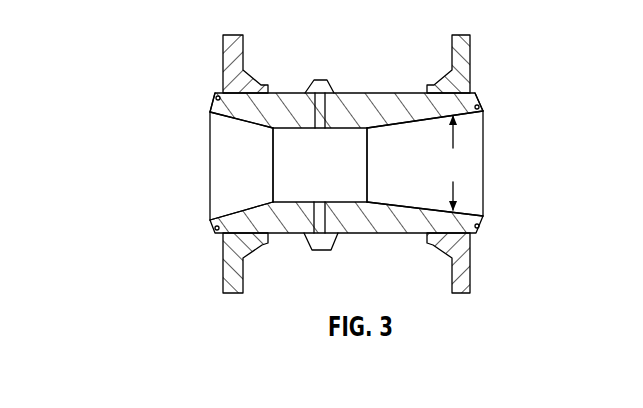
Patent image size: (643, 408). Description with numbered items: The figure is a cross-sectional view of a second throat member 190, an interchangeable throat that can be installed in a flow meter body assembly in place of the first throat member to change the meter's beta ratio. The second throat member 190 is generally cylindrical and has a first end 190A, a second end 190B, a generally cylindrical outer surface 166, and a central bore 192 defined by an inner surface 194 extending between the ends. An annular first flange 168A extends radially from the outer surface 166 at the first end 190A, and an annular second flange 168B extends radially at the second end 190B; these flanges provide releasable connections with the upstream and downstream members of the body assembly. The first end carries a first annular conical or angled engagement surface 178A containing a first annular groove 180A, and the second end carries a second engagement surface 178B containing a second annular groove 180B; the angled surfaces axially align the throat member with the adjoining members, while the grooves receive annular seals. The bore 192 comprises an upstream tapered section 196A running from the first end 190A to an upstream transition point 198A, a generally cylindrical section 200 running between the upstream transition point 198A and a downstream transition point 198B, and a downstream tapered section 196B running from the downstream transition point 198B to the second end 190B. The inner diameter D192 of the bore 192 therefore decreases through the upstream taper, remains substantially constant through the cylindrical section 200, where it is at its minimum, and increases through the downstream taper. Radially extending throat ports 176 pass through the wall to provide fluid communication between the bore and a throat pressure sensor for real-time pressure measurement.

The outer surface 166 is at (347, 166).
The first flange 168A is at (228, 298).
The second flange 168B is at (468, 298).
The throat ports 176 is at (317, 112).
The first engagement surface 178A is at (215, 227).
The second engagement surface 178B is at (479, 228).
The first annular groove 180A is at (180, 240).
The second annular groove 180B is at (535, 240).
The second throat member 190 is at (345, 157).
The first end 190A is at (211, 111).
The second end 190B is at (479, 105).
The bore 192 is at (414, 163).
The inner diameter D192 is at (453, 163).
The inner surface 194 is at (383, 126).
The upstream tapered section 196A is at (225, 152).
The downstream tapered section 196B is at (473, 185).
The upstream transition point 198A is at (273, 203).
The downstream transition point 198B is at (368, 203).
The cylindrical section 200 is at (347, 194).